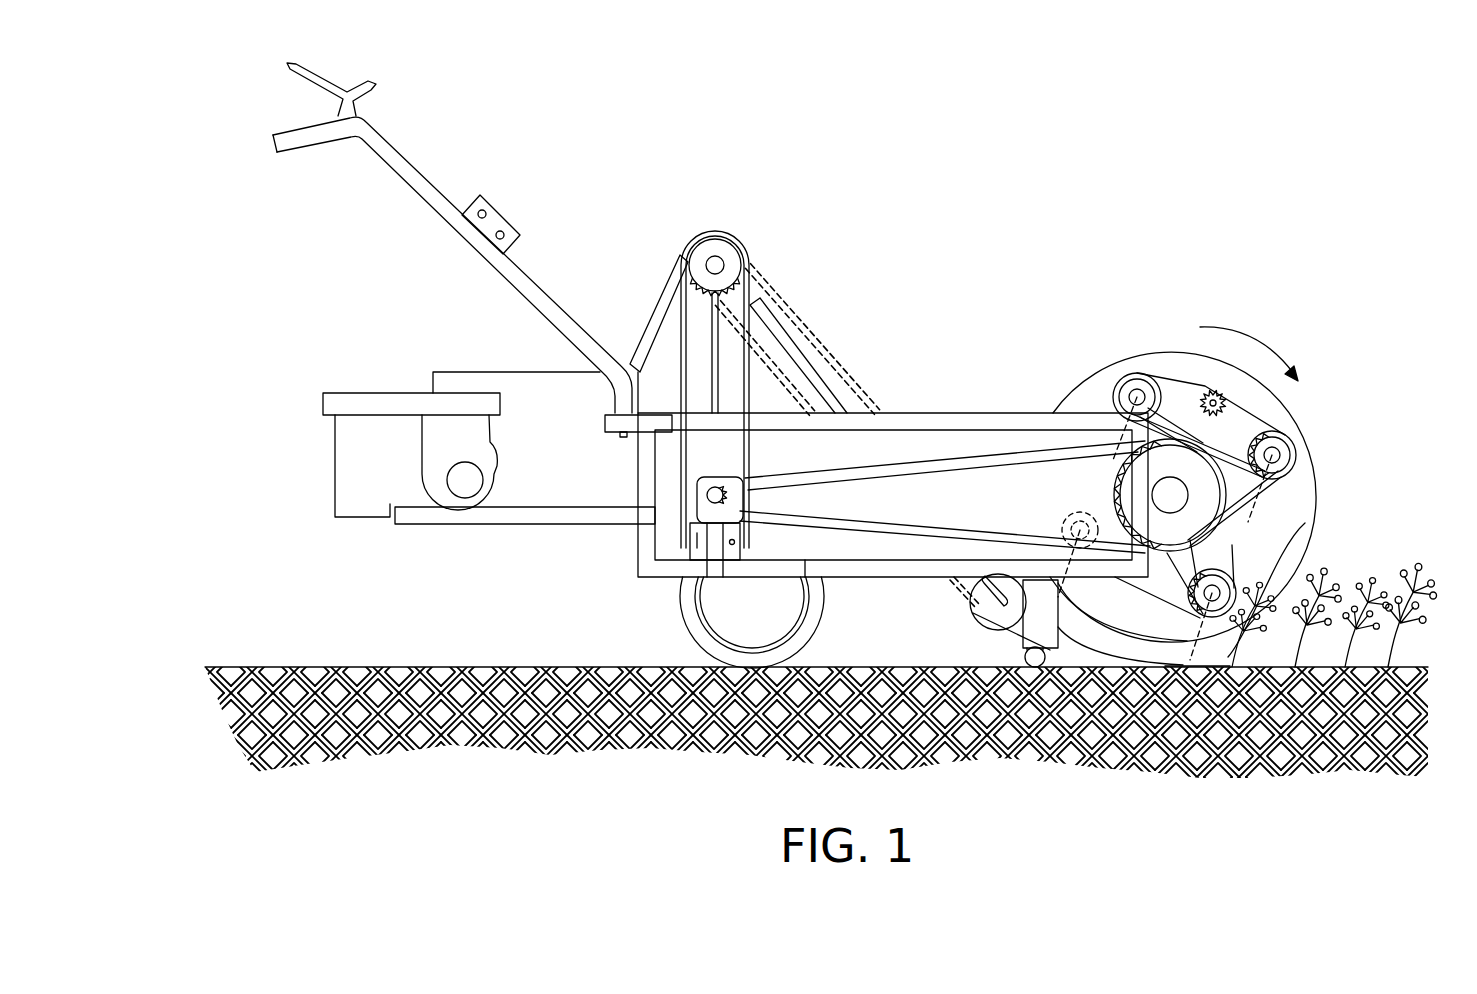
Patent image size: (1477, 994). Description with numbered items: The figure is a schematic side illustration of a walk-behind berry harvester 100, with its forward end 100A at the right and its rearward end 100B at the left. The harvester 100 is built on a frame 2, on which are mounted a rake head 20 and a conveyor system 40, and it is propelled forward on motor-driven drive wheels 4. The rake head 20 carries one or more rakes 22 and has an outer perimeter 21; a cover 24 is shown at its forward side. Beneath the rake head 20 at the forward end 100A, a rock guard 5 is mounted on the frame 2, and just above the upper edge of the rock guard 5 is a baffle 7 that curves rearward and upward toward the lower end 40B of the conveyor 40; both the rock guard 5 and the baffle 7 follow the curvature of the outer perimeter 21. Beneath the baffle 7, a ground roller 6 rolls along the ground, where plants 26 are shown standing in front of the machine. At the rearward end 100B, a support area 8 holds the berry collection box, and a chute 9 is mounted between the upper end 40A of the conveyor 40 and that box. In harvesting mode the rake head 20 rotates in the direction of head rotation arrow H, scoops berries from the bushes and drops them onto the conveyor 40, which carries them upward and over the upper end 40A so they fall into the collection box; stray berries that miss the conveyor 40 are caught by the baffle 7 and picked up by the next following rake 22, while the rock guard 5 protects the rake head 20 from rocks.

The walk-behind berry harvester 100 is at (1012, 154).
The forward end 100A is at (1340, 331).
The rearward end 100B is at (246, 320).
The frame 2 is at (965, 413).
The motor-driven drive wheels 4 is at (690, 622).
The rock guard 5 is at (1188, 657).
The ground roller 6 is at (1025, 660).
The baffle 7 is at (1083, 658).
The support area 8 is at (433, 378).
The chute 9 is at (658, 313).
The rake head 20 is at (1275, 413).
The outer perimeter 21 is at (1097, 372).
The rake 22 is at (1262, 497).
The cover 24 is at (1305, 523).
The plants 26 is at (1198, 653).
The conveyor system 40 is at (781, 292).
The upper end of the conveyor 40A is at (713, 231).
The lower end of the conveyor 40B is at (985, 608).
The head rotation arrow H is at (1245, 332).